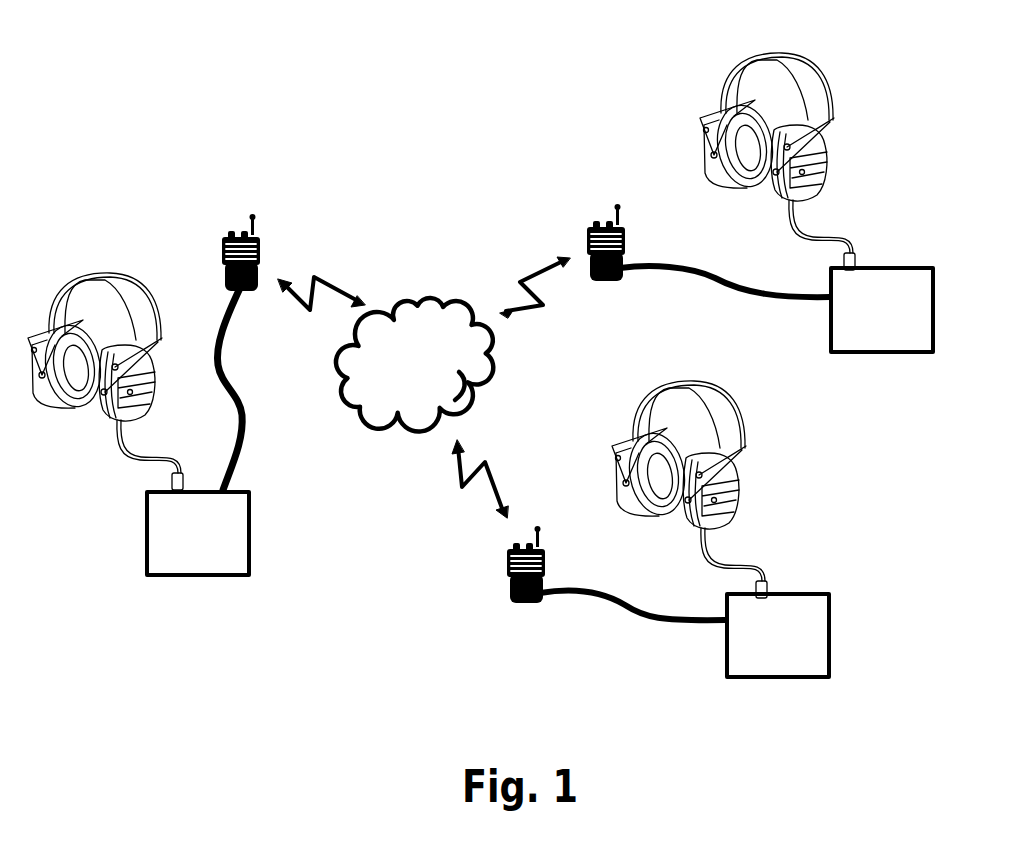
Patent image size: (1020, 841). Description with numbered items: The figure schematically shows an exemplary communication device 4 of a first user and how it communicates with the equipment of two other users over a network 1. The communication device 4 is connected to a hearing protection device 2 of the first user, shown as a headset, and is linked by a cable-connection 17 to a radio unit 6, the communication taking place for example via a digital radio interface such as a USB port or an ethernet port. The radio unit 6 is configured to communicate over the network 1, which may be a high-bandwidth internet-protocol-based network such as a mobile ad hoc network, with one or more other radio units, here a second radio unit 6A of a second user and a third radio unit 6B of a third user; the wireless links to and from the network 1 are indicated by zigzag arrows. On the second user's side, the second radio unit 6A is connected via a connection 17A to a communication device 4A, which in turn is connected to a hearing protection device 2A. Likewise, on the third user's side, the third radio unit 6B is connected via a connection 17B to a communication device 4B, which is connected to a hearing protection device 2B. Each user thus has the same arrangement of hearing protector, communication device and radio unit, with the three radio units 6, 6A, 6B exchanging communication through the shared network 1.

The network 1 is at (412, 310).
The hearing protection device 2 is at (93, 417).
The hearing protection device 2A is at (820, 80).
The hearing protection device 2B is at (730, 412).
The communication device 4 is at (250, 543).
The communication device 4A is at (907, 266).
The communication device 4B is at (782, 678).
The radio unit 6 is at (223, 247).
The second radio unit 6A is at (590, 225).
The third radio unit 6B is at (522, 605).
The cable-connection 17 is at (238, 397).
The connection 17A is at (712, 282).
The connection 17B is at (667, 620).